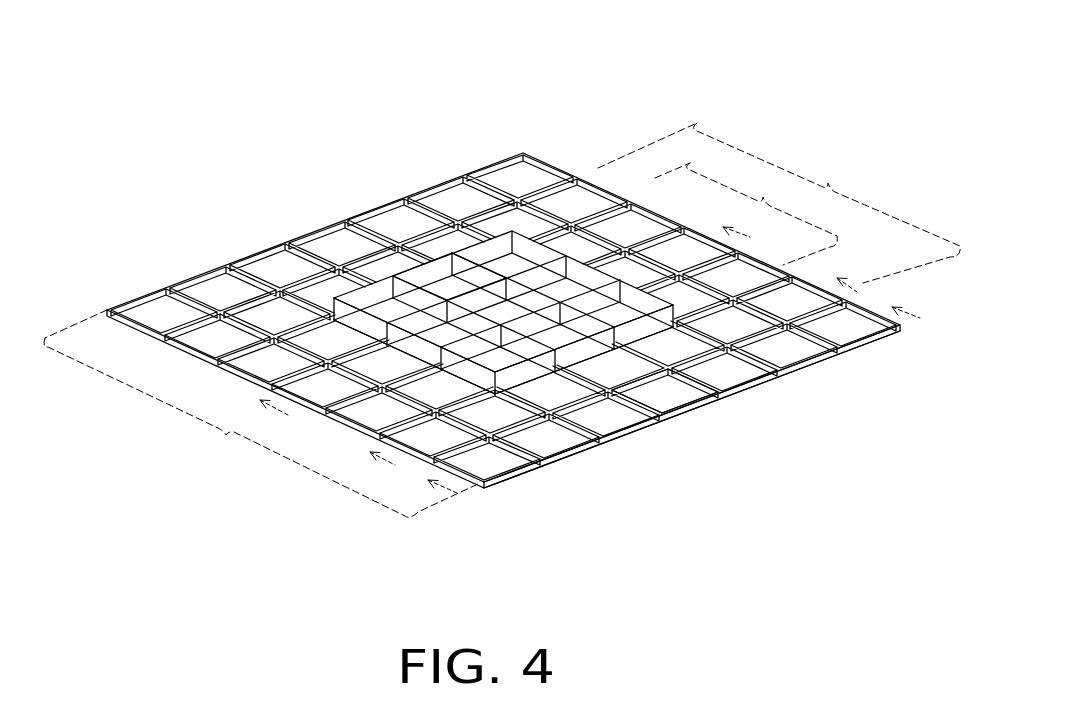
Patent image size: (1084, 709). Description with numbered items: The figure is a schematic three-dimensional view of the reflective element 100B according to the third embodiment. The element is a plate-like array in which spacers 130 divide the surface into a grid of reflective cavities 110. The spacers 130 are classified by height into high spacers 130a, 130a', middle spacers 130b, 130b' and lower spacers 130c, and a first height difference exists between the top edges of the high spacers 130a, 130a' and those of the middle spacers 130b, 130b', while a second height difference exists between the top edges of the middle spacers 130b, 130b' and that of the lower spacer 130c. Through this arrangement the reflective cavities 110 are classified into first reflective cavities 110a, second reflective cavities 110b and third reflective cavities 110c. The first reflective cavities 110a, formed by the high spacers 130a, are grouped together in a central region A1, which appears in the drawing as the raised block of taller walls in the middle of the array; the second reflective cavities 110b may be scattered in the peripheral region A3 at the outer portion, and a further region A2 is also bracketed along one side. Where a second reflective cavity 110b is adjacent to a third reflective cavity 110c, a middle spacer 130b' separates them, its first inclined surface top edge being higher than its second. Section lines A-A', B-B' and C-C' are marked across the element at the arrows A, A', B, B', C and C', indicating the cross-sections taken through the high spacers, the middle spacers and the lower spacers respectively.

The reflective element 100B is at (173, 55).
The reflective cavities 110 is at (448, 100).
The first reflective cavities 110a is at (445, 287).
The second reflective cavities 110b is at (393, 265).
The third reflective cavities 110c is at (333, 243).
The spacers 130 is at (830, 538).
The high spacers 130a is at (503, 429).
The high spacers 130a' is at (503, 418).
The middle spacers 130b is at (622, 441).
The middle spacers 130b' is at (682, 454).
The lower spacers 130c is at (700, 410).
The central region A1 is at (746, 214).
The second region A2 is at (779, 203).
The peripheral region A3 is at (261, 413).
The line A-A' A is at (261, 412).
The line A- A' is at (740, 220).
The line B-B' B is at (372, 465).
The line B- B' is at (853, 274).
The line C-C' C is at (431, 492).
The line C- C' is at (910, 301).